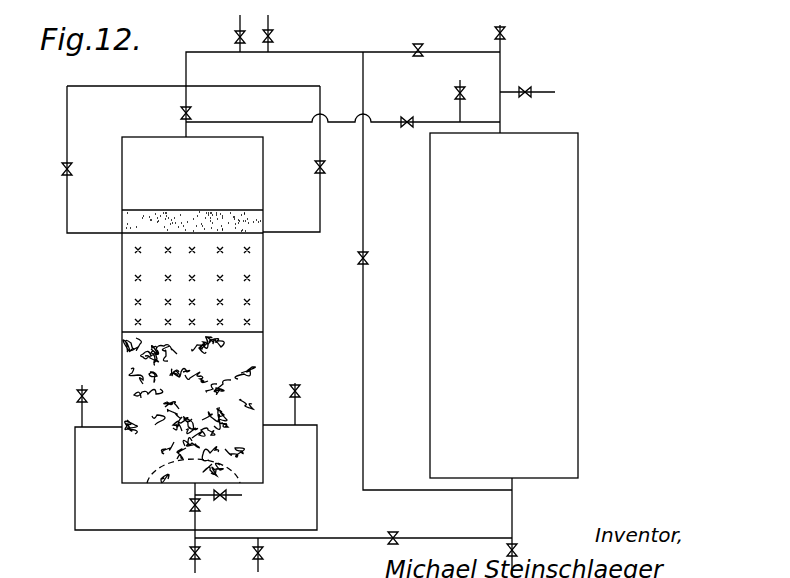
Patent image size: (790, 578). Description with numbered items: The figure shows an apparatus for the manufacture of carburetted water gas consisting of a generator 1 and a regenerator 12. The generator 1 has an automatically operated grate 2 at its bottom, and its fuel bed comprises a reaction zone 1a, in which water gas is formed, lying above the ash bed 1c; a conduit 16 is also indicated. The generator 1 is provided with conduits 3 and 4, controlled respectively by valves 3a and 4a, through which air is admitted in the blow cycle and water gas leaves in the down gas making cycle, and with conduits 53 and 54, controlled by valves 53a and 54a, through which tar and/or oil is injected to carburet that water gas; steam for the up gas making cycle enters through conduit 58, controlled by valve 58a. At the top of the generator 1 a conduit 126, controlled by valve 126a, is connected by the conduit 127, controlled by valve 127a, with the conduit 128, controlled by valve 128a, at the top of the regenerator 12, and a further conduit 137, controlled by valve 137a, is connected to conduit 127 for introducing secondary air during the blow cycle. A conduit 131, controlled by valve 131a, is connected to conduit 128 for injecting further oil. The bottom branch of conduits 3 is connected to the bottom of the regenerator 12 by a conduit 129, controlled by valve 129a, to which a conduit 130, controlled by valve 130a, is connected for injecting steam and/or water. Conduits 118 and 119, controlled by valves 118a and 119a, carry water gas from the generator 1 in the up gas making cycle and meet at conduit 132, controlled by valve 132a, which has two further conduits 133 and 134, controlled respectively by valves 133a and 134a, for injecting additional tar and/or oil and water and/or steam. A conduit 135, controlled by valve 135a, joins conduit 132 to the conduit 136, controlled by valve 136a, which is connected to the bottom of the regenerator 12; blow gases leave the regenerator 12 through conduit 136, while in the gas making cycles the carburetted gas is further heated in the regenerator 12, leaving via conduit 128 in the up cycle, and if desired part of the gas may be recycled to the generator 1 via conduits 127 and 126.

The generator 1 is at (263, 172).
The reaction zone 1a is at (133, 277).
The ash bed 1c is at (140, 403).
The automatically operated grate 2 is at (120, 487).
The conduit 3 is at (75, 472).
The valve 3a is at (192, 556).
The conduit 4 is at (195, 518).
The valve 4a is at (193, 504).
The regenerator 12 is at (430, 394).
The conduit 16 is at (263, 214).
The conduit 53 is at (82, 383).
The valve 53a is at (78, 398).
The conduit 54 is at (292, 376).
The valve 54a is at (300, 392).
The conduit 58 is at (207, 498).
The valve 58a is at (227, 495).
The conduit 118 is at (67, 198).
The valve 118a is at (69, 163).
The conduit 119 is at (320, 185).
The valve 119a is at (318, 163).
The conduit 126 is at (189, 107).
The valve 126a is at (183, 111).
The conduit 127 is at (438, 112).
The valve 127a is at (403, 118).
The conduit 128 is at (500, 108).
The valve 128a is at (506, 33).
The conduit 129 is at (365, 536).
The valve 129a is at (398, 537).
The conduit 130 is at (255, 552).
The valve 130a is at (262, 553).
The conduit 131 is at (541, 91).
The valve 131a is at (527, 88).
The conduit 132 is at (186, 65).
The valve 132a is at (418, 44).
The conduit 133 is at (240, 22).
The valve 133a is at (235, 37).
The conduit 134 is at (272, 23).
The valve 134a is at (274, 37).
The conduit 135 is at (363, 306).
The valve 135a is at (358, 260).
The conduit 136 is at (513, 508).
The valve 136a is at (516, 549).
The conduit 137 is at (461, 84).
The valve 137a is at (456, 91).